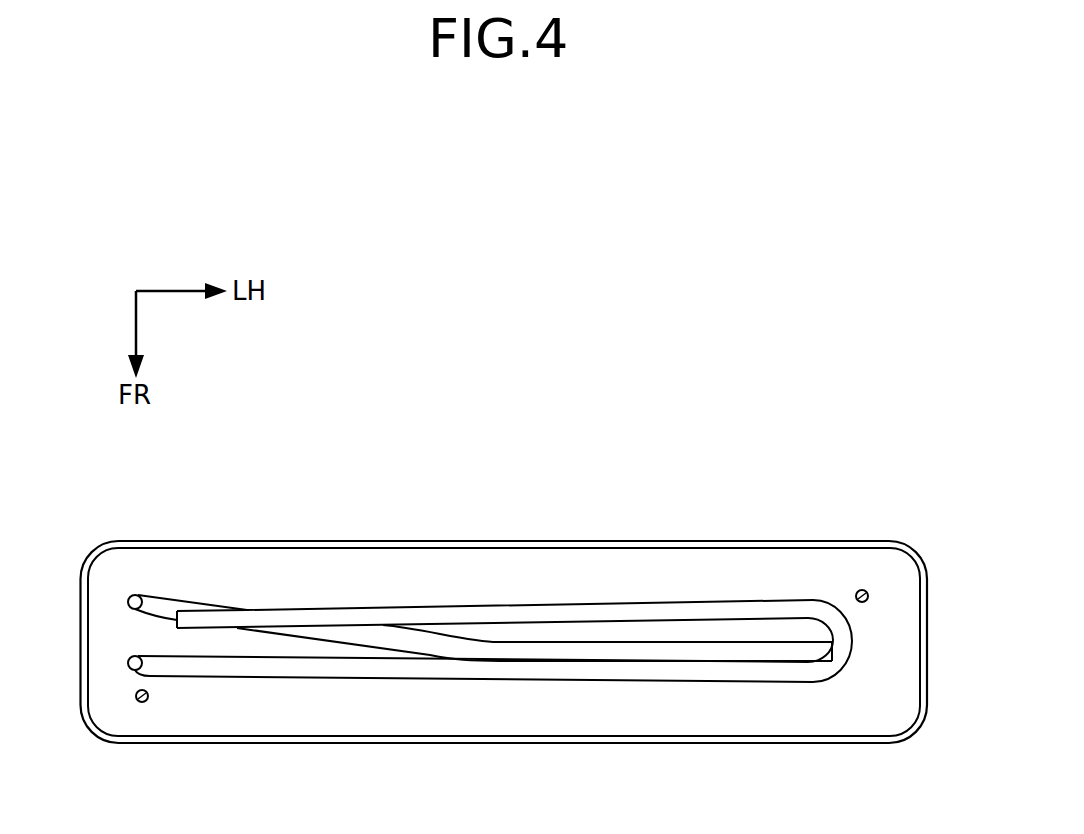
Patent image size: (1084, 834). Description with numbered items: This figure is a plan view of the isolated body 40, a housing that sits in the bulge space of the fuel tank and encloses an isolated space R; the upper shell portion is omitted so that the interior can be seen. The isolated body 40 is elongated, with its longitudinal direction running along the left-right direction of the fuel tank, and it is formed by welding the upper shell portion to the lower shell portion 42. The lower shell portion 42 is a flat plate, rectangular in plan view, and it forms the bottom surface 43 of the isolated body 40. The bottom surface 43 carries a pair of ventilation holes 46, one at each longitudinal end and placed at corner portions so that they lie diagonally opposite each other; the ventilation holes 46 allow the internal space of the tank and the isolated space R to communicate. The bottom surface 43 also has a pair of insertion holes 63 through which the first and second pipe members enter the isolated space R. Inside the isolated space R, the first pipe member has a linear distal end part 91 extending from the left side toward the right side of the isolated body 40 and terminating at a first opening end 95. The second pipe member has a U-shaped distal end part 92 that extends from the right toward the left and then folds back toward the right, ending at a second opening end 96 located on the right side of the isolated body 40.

The isolated body 40 is at (519, 585).
The lower shell portion 42 is at (927, 585).
The bottom surface 43 is at (870, 685).
The ventilation hole 46 is at (150, 693).
The insertion hole 63 is at (143, 595).
The distal end part 91 is at (447, 572).
The distal end part 92 is at (441, 612).
The first opening end 95 is at (845, 610).
The second opening end 96 is at (167, 607).
The isolated space R is at (350, 543).